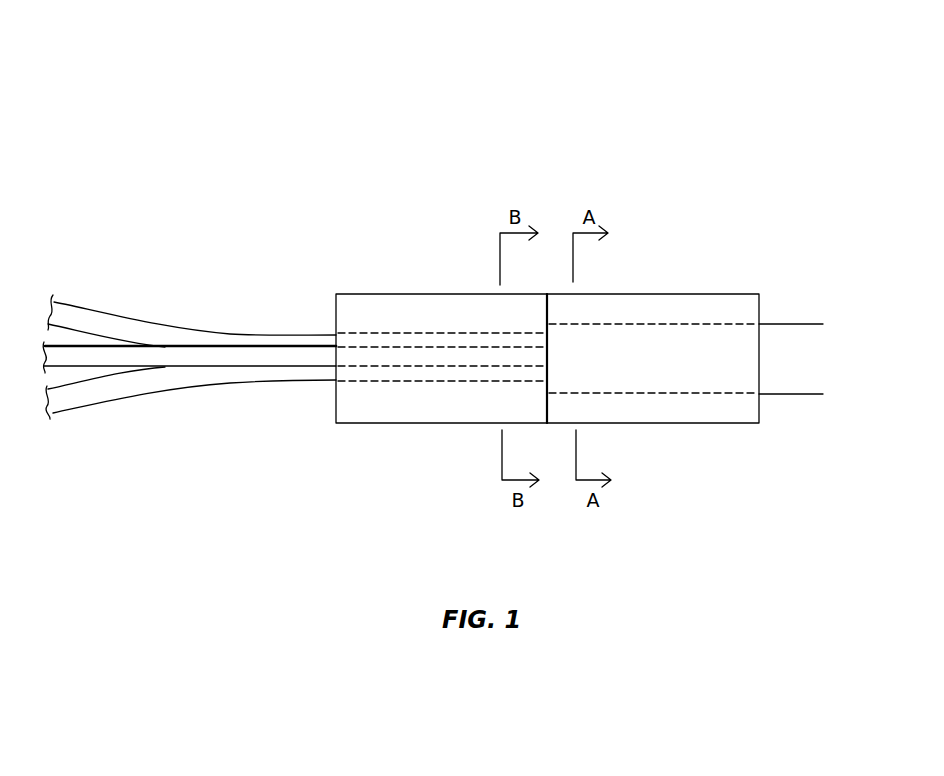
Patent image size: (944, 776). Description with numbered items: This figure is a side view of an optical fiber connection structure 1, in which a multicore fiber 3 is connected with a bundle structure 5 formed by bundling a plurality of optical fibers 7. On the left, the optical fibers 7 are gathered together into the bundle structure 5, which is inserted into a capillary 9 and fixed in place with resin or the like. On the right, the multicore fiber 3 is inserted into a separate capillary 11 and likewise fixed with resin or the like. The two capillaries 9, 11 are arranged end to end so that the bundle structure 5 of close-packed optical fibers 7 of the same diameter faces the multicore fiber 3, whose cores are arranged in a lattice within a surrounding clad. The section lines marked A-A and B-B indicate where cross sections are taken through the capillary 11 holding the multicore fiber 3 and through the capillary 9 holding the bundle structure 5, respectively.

The optical fiber connection structure 1 is at (473, 144).
The multicore fiber 3 is at (723, 347).
The bundle structure 5 is at (290, 392).
The optical fibers 7 is at (138, 333).
The capillary 9 is at (357, 415).
The capillary 11 is at (693, 410).